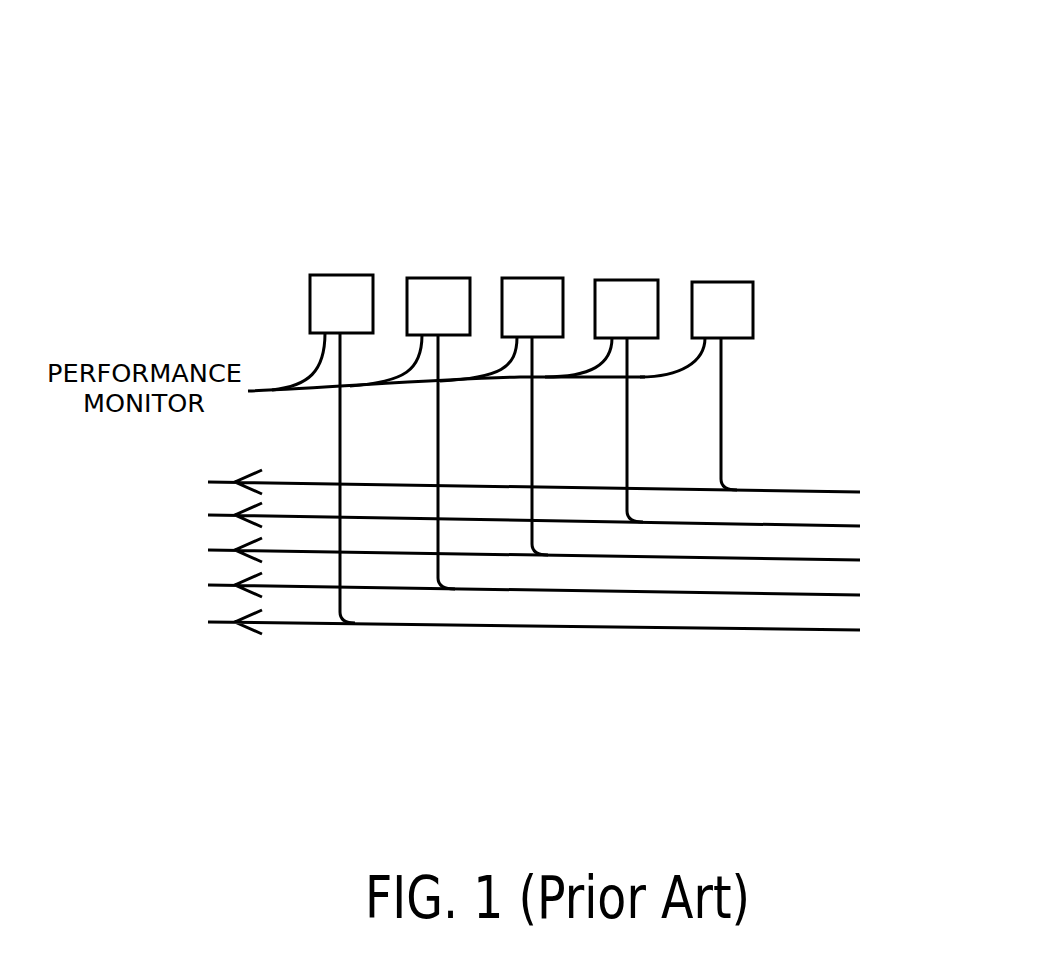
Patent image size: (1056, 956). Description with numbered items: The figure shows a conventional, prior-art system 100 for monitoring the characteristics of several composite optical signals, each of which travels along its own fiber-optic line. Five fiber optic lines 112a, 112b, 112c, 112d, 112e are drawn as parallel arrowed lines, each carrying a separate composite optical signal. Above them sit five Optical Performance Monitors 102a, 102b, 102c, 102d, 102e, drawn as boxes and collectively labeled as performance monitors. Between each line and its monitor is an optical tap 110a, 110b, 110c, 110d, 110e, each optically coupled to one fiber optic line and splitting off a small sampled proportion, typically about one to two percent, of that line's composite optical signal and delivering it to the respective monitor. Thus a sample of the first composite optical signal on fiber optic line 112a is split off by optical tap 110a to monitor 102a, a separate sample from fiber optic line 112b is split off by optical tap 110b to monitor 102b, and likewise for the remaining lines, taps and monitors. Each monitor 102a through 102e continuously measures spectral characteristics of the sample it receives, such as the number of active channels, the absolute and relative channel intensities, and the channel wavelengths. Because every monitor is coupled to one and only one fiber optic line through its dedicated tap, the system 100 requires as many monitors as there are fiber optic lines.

The conventional system 100 is at (248, 42).
The optical performance monitor 102a is at (313, 273).
The optical performance monitor 102b is at (408, 277).
The optical performance monitor 102c is at (503, 278).
The optical performance monitor 102d is at (597, 280).
The optical performance monitor 102e is at (692, 282).
The optical tap 110a is at (371, 615).
The optical tap 110b is at (466, 581).
The optical tap 110c is at (559, 548).
The optical tap 110d is at (651, 514).
The optical tap 110e is at (748, 482).
The fiber optic line 112a is at (860, 630).
The fiber optic line 112b is at (862, 595).
The fiber optic line 112c is at (860, 560).
The fiber optic line 112d is at (862, 526).
The fiber optic line 112e is at (860, 492).